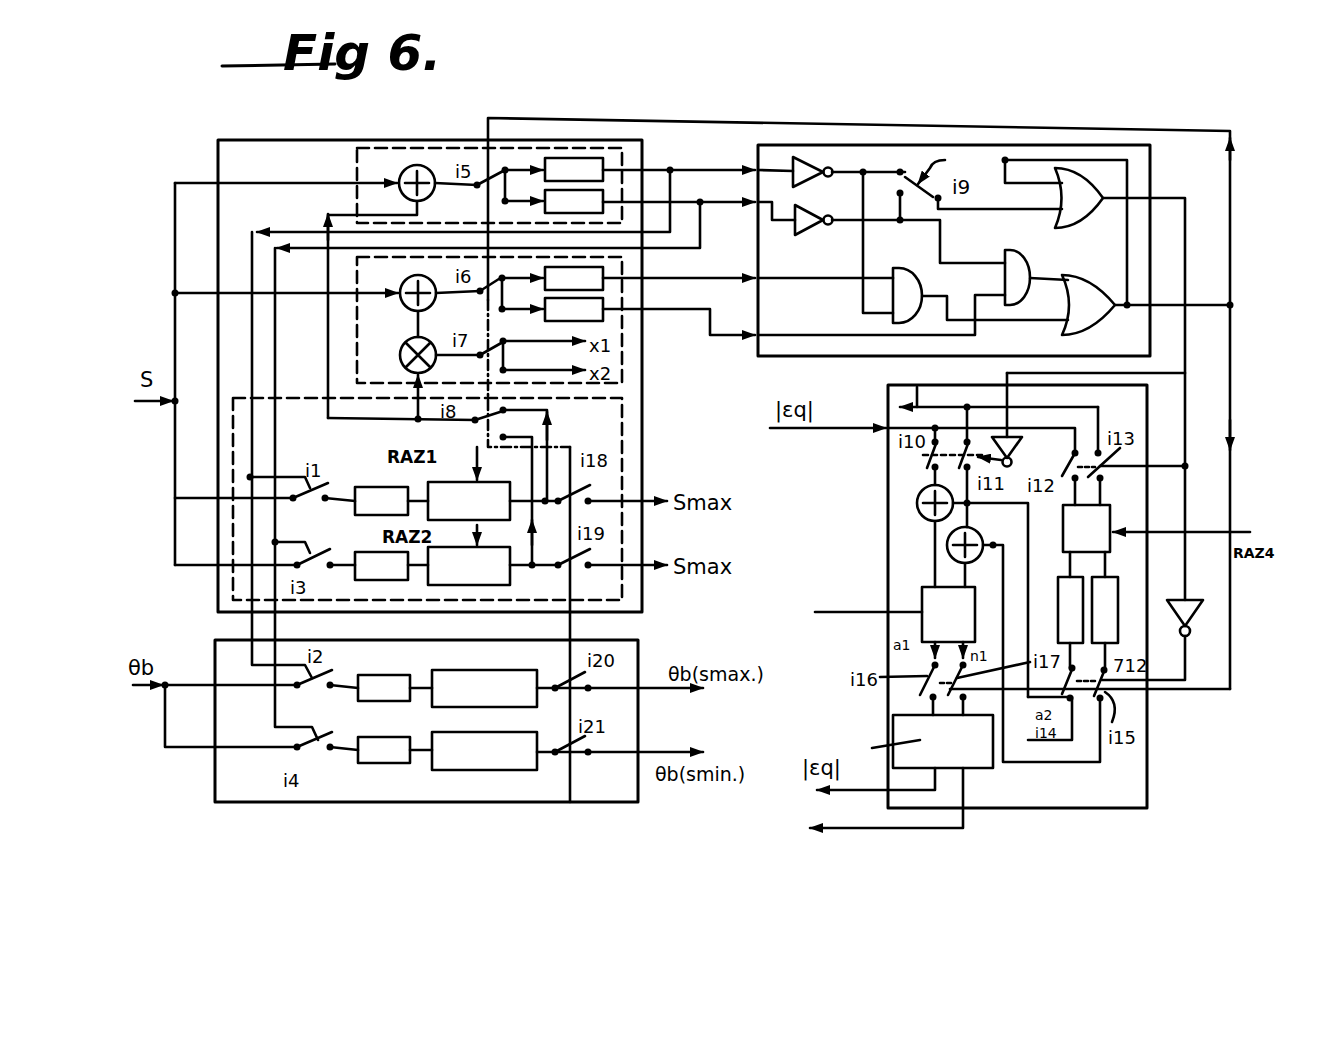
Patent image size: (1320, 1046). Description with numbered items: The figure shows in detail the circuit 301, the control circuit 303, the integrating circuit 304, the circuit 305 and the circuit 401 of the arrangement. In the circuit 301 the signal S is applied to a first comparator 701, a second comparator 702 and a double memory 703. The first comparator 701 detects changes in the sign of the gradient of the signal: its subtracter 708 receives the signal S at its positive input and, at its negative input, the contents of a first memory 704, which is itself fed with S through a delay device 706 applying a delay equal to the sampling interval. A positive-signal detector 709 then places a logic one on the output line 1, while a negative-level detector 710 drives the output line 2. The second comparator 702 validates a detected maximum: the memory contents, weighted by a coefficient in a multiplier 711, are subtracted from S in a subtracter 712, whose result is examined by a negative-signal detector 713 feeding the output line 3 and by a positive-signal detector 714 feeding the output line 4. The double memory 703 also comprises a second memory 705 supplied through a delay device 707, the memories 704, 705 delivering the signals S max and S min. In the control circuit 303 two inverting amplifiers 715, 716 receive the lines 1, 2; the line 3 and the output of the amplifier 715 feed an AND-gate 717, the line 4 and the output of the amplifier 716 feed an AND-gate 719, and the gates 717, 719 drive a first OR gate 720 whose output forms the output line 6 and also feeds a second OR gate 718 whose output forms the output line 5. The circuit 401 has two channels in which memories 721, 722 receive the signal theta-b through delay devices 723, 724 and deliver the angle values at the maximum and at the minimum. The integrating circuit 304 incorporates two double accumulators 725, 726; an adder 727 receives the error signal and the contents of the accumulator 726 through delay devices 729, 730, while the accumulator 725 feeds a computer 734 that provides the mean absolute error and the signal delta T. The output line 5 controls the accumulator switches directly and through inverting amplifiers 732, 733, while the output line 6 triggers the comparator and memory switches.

The circuit 301 is at (218, 172).
The control circuit 303 is at (780, 357).
The integrating circuit 304 is at (1017, 611).
The circuit 305 is at (1030, 812).
The circuit 401 is at (588, 800).
The first comparator 701 is at (357, 172).
The second comparator 702 is at (357, 330).
The double memory 703 is at (330, 398).
The first memory 704 is at (428, 484).
The second memory 705 is at (440, 584).
The delay device 706 is at (355, 510).
The delay device 707 is at (365, 582).
The subtracter 708 is at (417, 165).
The positive-signal detector 709 is at (557, 158).
The negative-level detector 710 is at (603, 200).
The multiplier 711 is at (408, 342).
The subtracter 712 is at (415, 291).
The negative-signal detector 713 is at (554, 287).
The positive-signal detector 714 is at (545, 318).
The inverting amplifier 715 is at (820, 172).
The inverting amplifier 716 is at (797, 228).
The AND-gate 717 is at (918, 258).
The second OR gate 718 is at (1098, 210).
The AND-gate 719 is at (1030, 245).
The first OR gate 720 is at (1078, 326).
The memory 721 is at (493, 670).
The memory 722 is at (483, 734).
The delay device 723 is at (372, 675).
The delay device 724 is at (400, 732).
The double accumulator 725 is at (922, 590).
The double accumulator 726 is at (1108, 510).
The adder 727 is at (917, 501).
The delay device 729 is at (1058, 592).
The delay device 730 is at (1112, 590).
The inverting amplifier 732 is at (1027, 452).
The inverting amplifier 733 is at (1200, 607).
The computer 734 is at (996, 770).
The output line 1 is at (733, 150).
The output line 2 is at (733, 185).
The output line 3 is at (726, 274).
The output line 4 is at (676, 312).
The output line 5 is at (1163, 198).
The output line 6 is at (1216, 298).